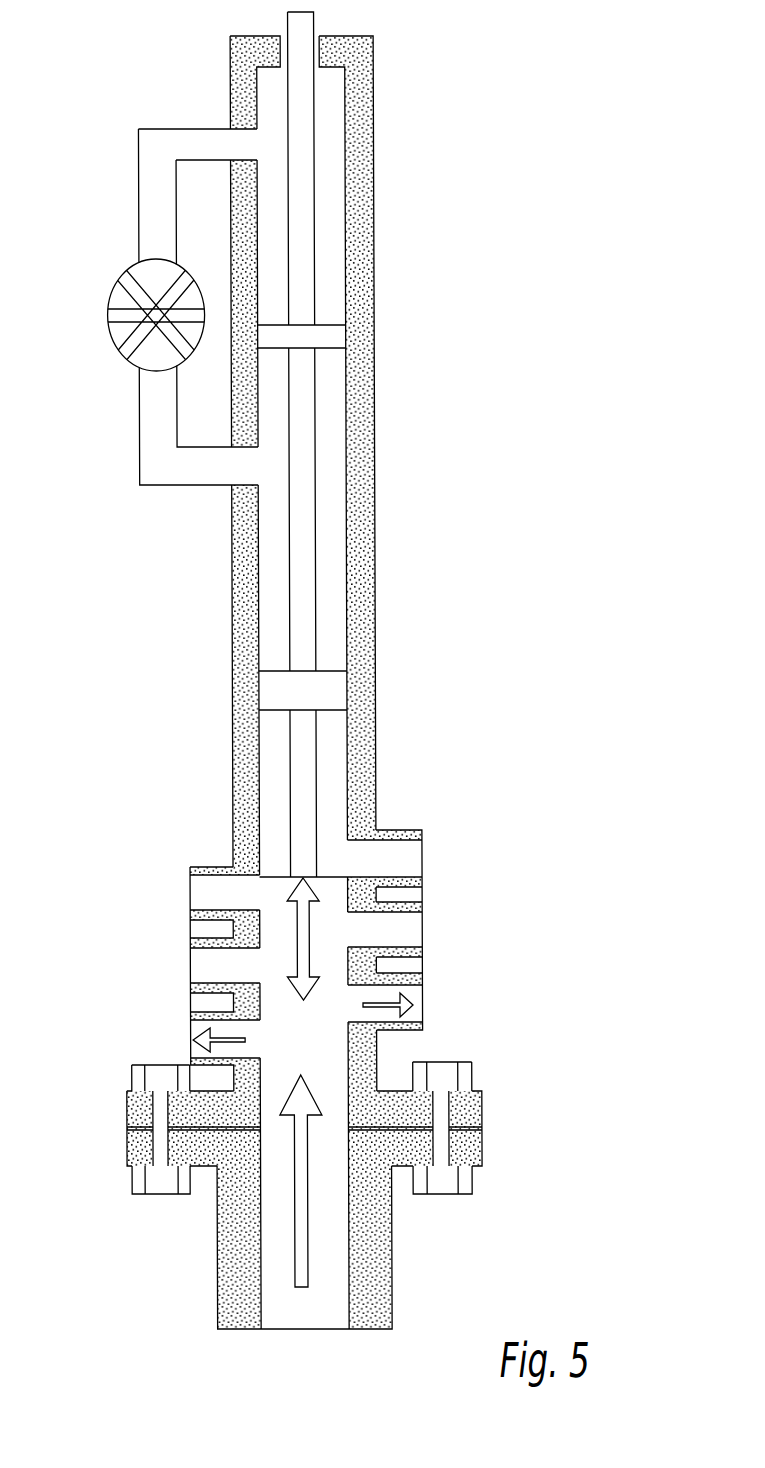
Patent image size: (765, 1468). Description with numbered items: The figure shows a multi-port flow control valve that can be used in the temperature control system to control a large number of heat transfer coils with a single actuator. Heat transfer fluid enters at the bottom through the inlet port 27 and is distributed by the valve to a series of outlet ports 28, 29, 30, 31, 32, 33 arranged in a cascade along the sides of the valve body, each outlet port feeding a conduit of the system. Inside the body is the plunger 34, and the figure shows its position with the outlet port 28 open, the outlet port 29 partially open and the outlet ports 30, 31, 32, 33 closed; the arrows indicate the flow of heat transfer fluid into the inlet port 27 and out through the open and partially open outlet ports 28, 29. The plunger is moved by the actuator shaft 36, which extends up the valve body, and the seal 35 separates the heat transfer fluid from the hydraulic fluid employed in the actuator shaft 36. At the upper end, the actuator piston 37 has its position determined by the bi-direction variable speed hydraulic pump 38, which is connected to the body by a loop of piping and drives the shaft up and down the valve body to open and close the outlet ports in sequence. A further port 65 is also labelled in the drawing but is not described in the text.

The inlet port 27 is at (288, 1300).
The outlet port 28 is at (190, 1040).
The outlet port 29 is at (418, 1007).
The outlet port 30 is at (186, 965).
The outlet port 31 is at (419, 930).
The outlet port 32 is at (187, 897).
The outlet port 33 is at (419, 832).
The plunger 34 is at (314, 965).
The seal 35 is at (256, 690).
The actuator shaft 36 is at (280, 540).
The actuator piston 37 is at (345, 335).
The bi-direction variable speed hydraulic pump 38 is at (110, 292).
The port 65 is at (419, 858).